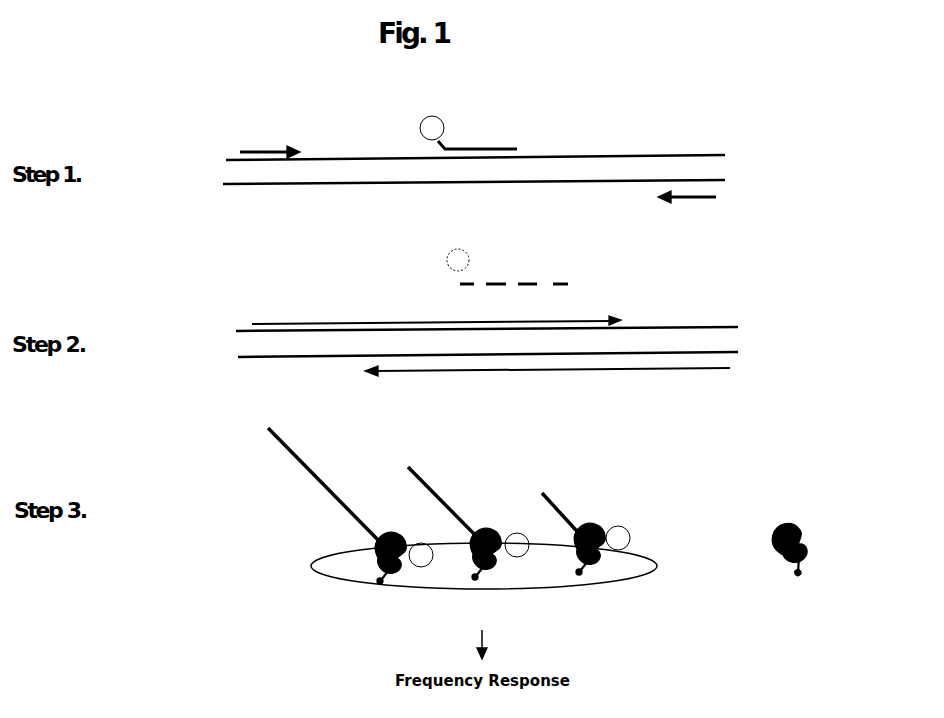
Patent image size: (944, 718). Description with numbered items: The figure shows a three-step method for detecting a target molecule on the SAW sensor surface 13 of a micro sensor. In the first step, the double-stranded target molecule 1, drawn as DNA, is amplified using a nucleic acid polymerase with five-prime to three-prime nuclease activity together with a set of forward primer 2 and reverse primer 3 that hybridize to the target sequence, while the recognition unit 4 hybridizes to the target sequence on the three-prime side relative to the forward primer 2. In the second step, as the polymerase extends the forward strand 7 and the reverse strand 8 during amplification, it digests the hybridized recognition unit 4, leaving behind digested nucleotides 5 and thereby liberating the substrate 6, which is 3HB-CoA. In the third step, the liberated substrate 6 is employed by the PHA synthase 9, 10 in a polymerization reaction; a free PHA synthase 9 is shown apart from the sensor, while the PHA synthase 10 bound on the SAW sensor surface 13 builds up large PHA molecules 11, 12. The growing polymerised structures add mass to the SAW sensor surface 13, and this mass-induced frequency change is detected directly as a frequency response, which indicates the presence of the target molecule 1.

The target molecule 1 is at (524, 255).
The forward primer 2 is at (279, 223).
The reverse primer 3 is at (698, 291).
The recognition unit 4 is at (473, 135).
The digested nucleotides 5 is at (522, 273).
The substrate 6 is at (450, 257).
The extended forward strand 7 is at (436, 308).
The extended reverse strand 8 is at (547, 383).
The PHA synthase 9 is at (793, 556).
The PHA synthase 10 is at (586, 533).
The PHA molecule 11 is at (468, 523).
The PHA molecule 12 is at (350, 506).
The SAW sensor surface 13 is at (484, 578).